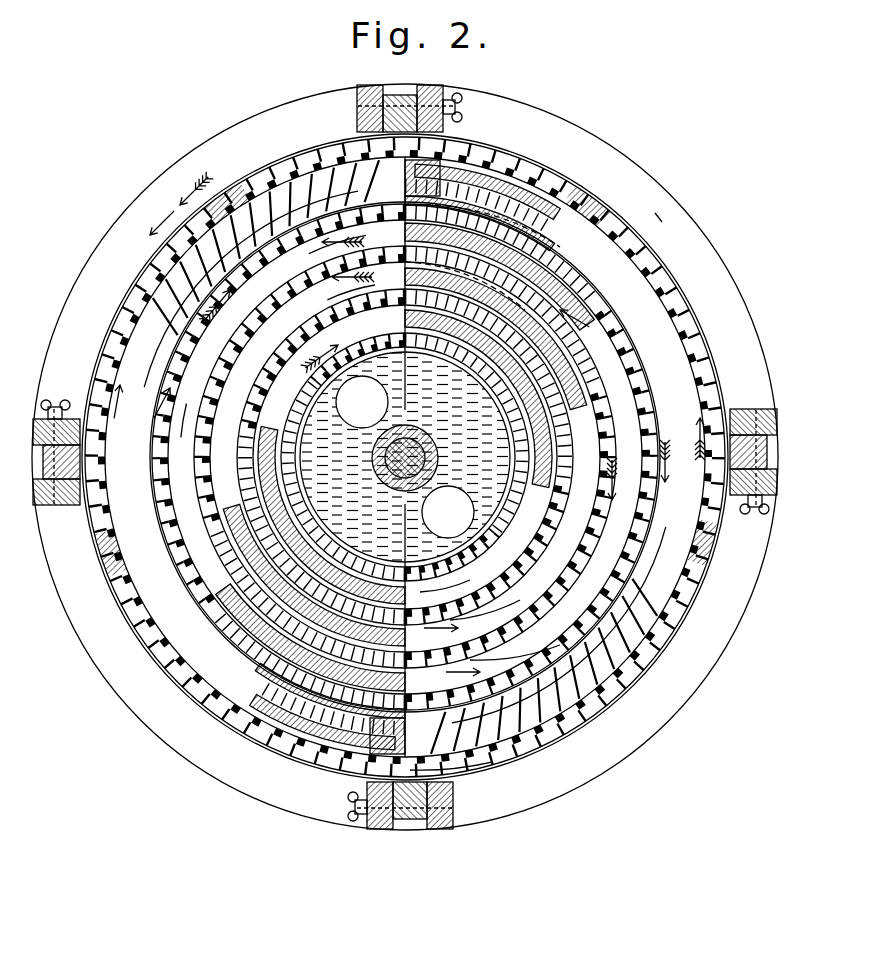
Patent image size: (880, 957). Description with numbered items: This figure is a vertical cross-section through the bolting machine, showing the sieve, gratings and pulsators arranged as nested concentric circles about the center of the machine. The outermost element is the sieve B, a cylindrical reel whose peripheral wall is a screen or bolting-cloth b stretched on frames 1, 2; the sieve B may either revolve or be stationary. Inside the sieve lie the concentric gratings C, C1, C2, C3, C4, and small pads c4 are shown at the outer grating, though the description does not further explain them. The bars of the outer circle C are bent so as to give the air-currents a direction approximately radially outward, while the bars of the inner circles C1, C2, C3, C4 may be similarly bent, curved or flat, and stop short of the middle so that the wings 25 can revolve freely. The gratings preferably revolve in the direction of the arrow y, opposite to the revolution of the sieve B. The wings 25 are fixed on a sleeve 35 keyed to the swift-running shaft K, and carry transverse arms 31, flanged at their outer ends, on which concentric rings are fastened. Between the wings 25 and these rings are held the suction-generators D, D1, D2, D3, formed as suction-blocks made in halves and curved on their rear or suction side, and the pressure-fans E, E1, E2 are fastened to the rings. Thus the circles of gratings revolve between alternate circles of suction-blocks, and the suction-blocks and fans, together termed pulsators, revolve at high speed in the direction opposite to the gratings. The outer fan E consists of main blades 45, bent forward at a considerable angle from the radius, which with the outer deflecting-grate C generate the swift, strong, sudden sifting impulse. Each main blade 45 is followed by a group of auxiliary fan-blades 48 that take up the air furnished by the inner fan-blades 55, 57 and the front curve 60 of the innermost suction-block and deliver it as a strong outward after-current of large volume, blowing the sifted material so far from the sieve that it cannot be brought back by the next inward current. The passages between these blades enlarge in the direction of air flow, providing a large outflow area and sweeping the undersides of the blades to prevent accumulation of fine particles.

The frame 1 is at (389, 443).
The frame 2 is at (402, 95).
The sieve B is at (405, 457).
The outer grating C is at (720, 250).
The packing pads c4 is at (227, 198).
The bolting-cloth b is at (652, 205).
The inner grating C1 is at (608, 333).
The inner grating C2 is at (596, 440).
The inner grating C3 is at (410, 457).
The inner grating C4 is at (436, 572).
The suction-generator D is at (407, 457).
The suction-generator D1 is at (406, 457).
The suction-generator D2 is at (408, 457).
The suction-generator D3 is at (406, 457).
The pressure-fan E is at (215, 262).
The pressure-fan E1 is at (273, 336).
The pressure-fan E2 is at (305, 342).
The wings 25 is at (388, 402).
The transverse arms 31 is at (548, 242).
The sleeve 35 is at (428, 452).
The shaft K is at (396, 490).
The main fan-blades 45 is at (610, 610).
The auxiliary fan-blades 48 is at (490, 770).
The inner fan-blade 55 is at (556, 612).
The inner fan-blade 57 is at (500, 610).
The front curve of suction-block 60 is at (445, 596).
The arrow y is at (138, 432).